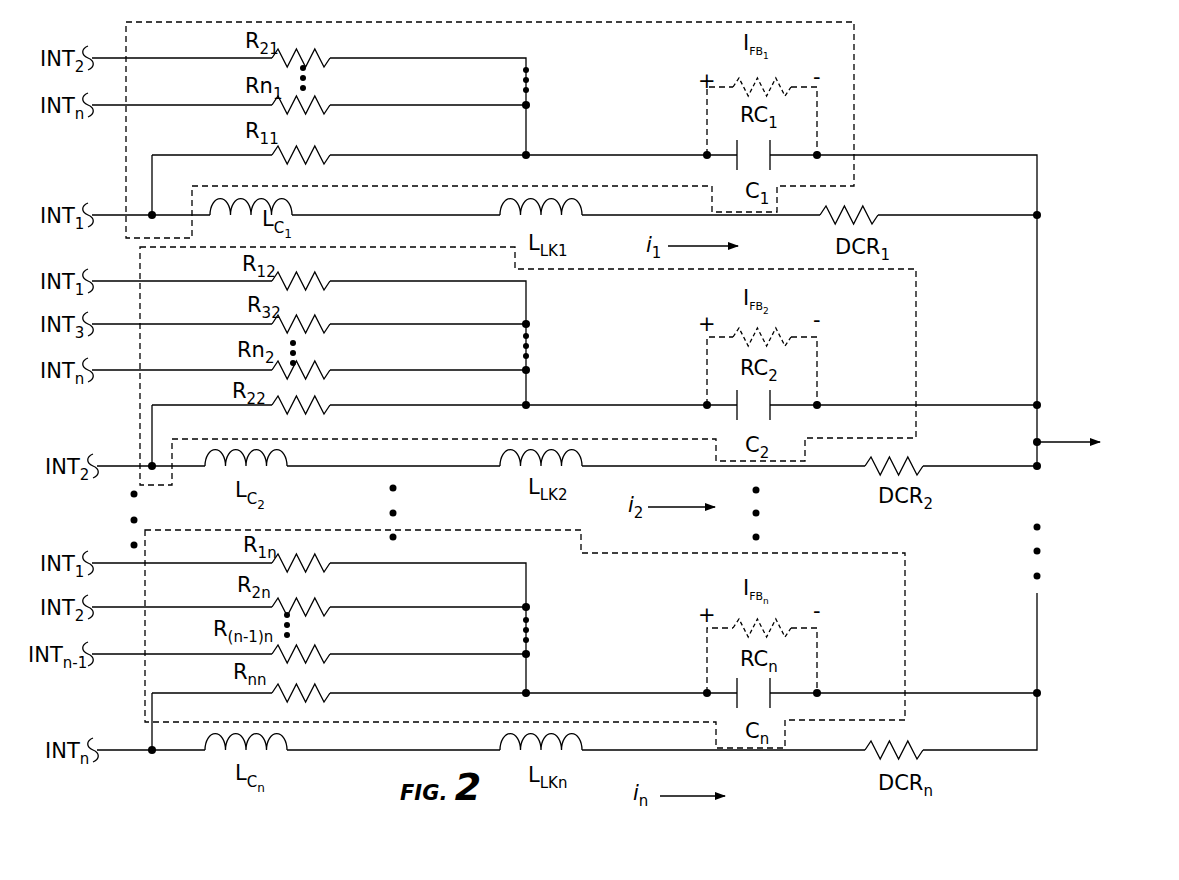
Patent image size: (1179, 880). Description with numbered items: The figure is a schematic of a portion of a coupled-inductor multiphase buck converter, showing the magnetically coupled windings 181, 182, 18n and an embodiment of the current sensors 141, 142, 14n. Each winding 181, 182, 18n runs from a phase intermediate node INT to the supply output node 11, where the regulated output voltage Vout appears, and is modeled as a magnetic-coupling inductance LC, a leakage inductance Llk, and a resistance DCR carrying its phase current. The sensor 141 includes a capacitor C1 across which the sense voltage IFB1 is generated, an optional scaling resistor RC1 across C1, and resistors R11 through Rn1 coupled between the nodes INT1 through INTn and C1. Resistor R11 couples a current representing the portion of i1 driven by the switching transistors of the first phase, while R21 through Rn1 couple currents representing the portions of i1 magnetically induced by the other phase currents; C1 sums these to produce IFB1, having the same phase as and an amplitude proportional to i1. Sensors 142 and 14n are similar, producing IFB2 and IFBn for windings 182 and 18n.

The current sensor 141 is at (855, 90).
The current sensor 142 is at (918, 287).
The current sensor 14n is at (907, 563).
The winding 181 is at (1043, 215).
The winding 182 is at (1044, 466).
The winding 18n is at (1048, 750).
The supply output node 11 is at (1041, 441).